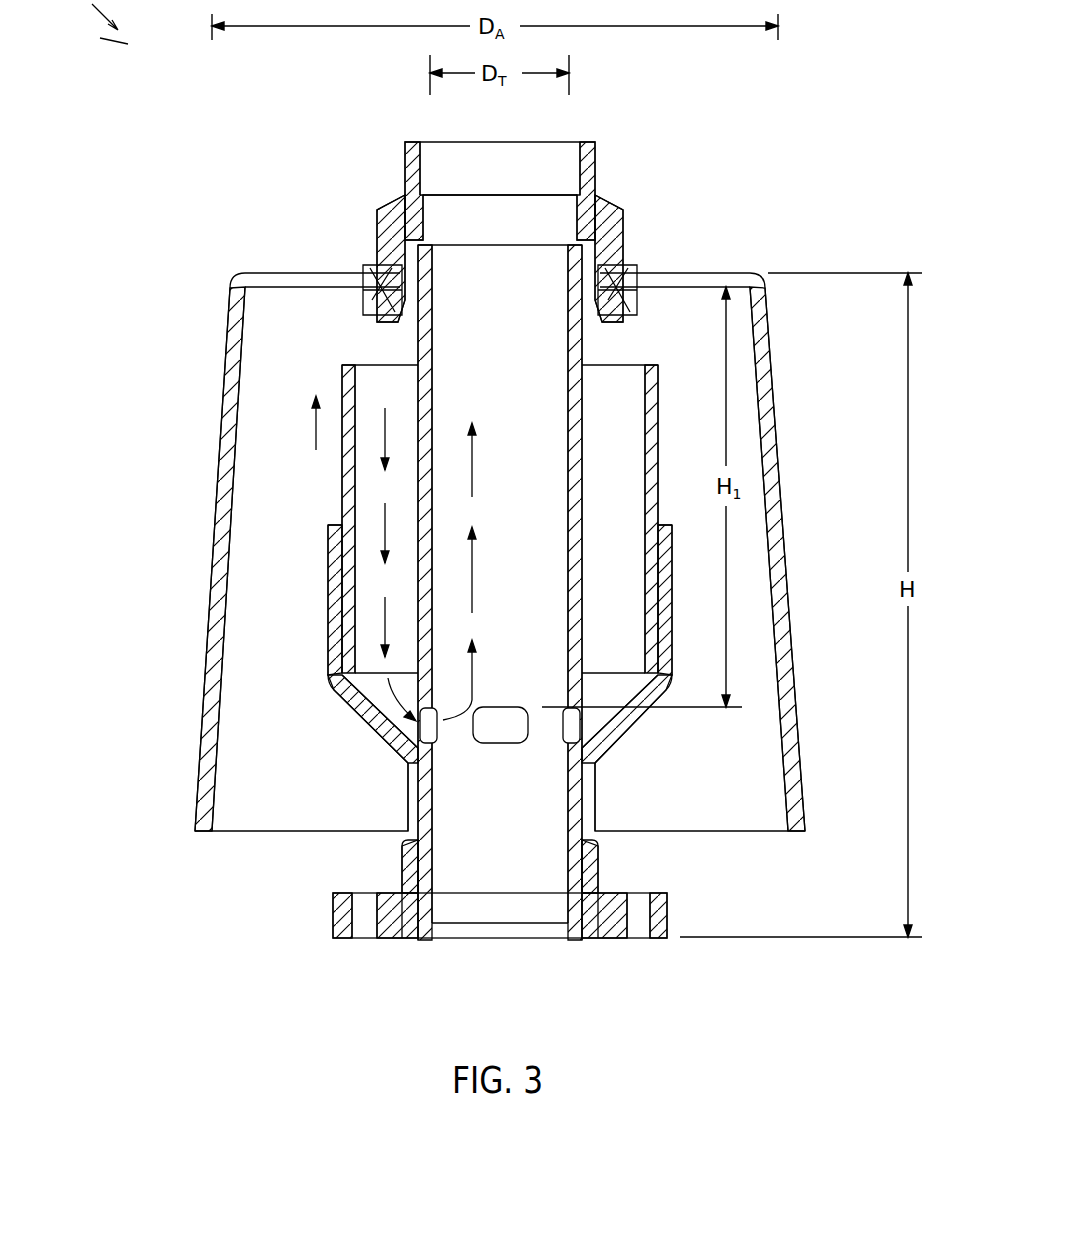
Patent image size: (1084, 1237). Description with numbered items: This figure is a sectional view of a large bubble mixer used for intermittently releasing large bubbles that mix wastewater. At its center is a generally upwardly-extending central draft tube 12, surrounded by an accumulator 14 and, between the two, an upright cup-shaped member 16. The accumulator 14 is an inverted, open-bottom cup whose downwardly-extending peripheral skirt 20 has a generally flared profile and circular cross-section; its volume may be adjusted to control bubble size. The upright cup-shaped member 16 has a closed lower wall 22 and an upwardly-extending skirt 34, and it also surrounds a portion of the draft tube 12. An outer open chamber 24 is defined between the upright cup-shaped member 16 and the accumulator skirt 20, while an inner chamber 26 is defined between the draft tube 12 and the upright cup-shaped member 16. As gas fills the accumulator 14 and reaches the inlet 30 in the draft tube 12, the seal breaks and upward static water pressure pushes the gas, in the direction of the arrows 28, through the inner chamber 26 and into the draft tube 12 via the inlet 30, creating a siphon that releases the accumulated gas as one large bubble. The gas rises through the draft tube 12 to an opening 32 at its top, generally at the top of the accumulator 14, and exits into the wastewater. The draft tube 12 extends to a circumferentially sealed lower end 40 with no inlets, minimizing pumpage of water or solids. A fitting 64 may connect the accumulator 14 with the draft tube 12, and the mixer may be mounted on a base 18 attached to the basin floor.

The central draft tube 12 is at (586, 343).
The accumulator 14 is at (519, 552).
The upright cup-shaped member 16 is at (680, 684).
The base 18 is at (667, 910).
The skirt 20 is at (800, 633).
The closed lower wall 22 is at (597, 785).
The outer open chamber 24 is at (258, 484).
The inner chamber 26 is at (618, 510).
The arrows 28 is at (384, 372).
The inlet 30 is at (493, 728).
The opening 32 is at (527, 153).
The skirt 34 is at (658, 402).
The lower end 40 is at (628, 845).
The fitting 64 is at (405, 185).